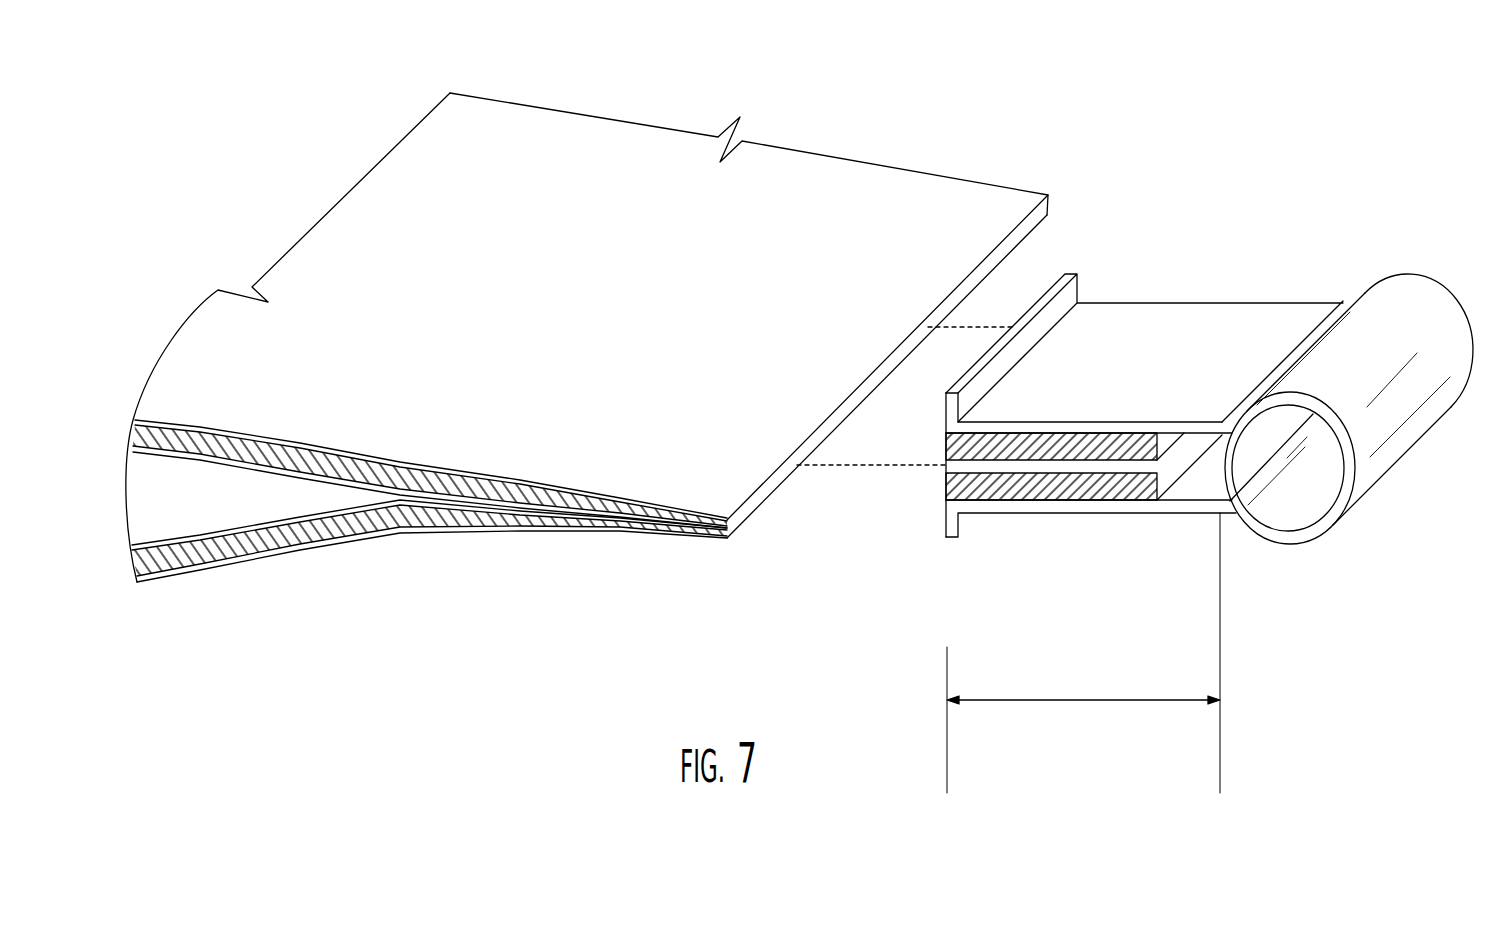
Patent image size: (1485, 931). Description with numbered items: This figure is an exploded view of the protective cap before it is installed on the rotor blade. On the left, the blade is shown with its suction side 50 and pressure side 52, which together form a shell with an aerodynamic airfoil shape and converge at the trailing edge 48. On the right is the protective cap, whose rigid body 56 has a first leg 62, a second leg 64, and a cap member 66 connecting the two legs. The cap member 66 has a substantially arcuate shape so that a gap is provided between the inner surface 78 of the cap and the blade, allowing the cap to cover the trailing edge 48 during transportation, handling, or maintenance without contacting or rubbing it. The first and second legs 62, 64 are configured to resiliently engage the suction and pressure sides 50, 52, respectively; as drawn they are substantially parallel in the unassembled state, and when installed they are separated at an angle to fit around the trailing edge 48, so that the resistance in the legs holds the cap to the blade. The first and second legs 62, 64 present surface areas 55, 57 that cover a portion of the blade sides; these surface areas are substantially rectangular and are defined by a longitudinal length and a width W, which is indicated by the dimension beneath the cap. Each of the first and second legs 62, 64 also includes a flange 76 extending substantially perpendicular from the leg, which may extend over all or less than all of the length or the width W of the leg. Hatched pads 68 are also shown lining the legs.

The trailing edge 48 is at (732, 533).
The suction side 50 is at (335, 452).
The pressure side 52 is at (310, 545).
The surface area of first leg 55 is at (1240, 343).
The rigid body 56 is at (1233, 545).
The surface area of second leg 57 is at (1148, 514).
The first leg 62 is at (1120, 428).
The second leg 64 is at (1067, 512).
The cap member 66 is at (1332, 518).
The pad 68 is at (1037, 442).
The flange 76 is at (1062, 297).
The inner surface 78 is at (1321, 507).
The width W is at (1080, 702).